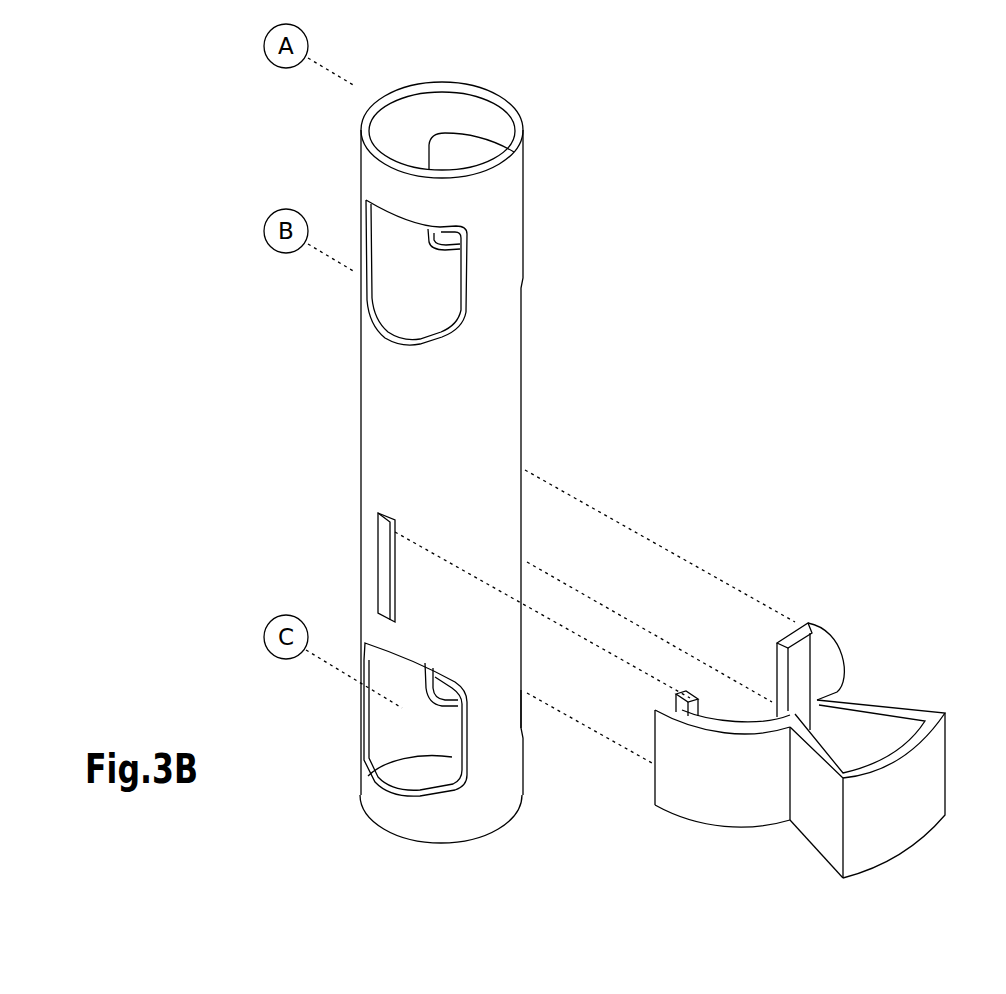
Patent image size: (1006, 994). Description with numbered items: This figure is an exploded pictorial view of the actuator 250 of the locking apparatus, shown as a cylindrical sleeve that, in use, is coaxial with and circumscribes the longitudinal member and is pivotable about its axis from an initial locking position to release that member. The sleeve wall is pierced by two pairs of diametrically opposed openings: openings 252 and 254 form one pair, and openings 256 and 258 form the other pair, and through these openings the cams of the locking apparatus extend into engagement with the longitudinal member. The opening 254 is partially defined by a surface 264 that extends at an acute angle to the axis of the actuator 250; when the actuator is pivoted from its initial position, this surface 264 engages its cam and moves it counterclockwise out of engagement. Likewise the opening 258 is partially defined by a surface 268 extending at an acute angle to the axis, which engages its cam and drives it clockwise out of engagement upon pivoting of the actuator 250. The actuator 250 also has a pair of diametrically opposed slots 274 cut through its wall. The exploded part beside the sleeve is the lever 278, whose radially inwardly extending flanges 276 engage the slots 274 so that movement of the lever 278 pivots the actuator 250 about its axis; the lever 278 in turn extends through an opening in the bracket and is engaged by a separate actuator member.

The actuator 250 is at (578, 144).
The opening 252 is at (523, 233).
The opening 254 is at (405, 278).
The opening 256 is at (520, 686).
The opening 258 is at (407, 735).
The surface 264 is at (462, 322).
The surface 268 is at (452, 675).
The slots 274 is at (382, 560).
The flanges 276 is at (794, 634).
The lever 278 is at (907, 708).